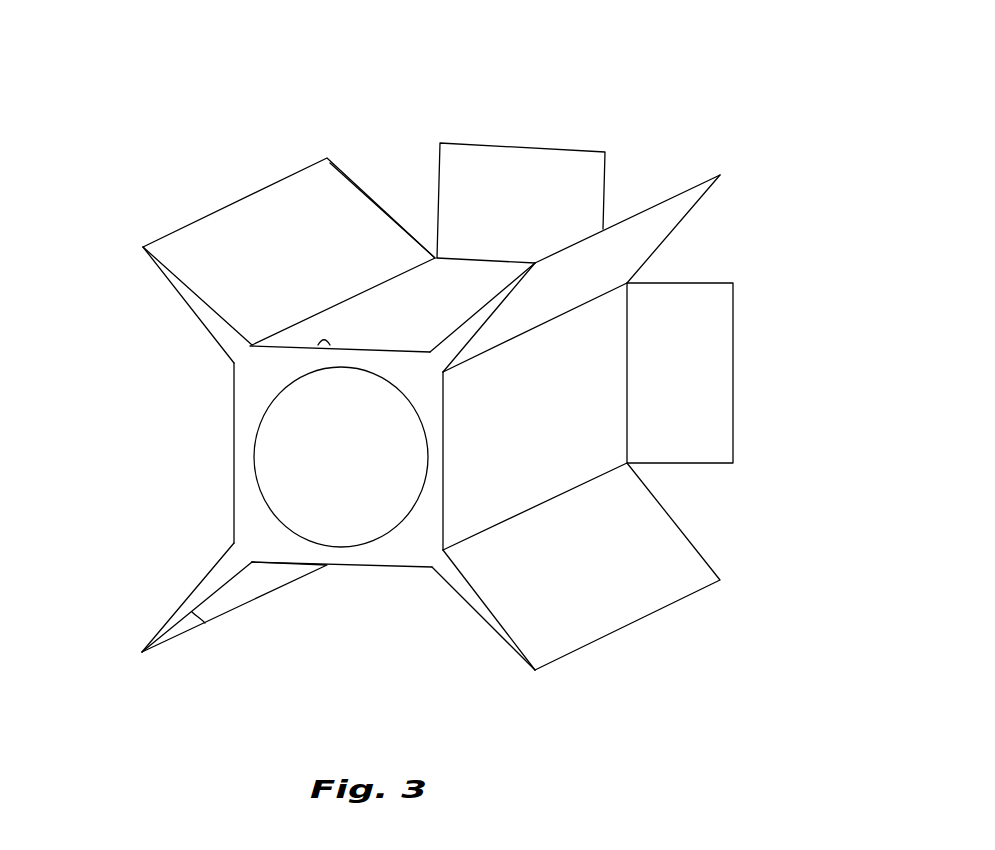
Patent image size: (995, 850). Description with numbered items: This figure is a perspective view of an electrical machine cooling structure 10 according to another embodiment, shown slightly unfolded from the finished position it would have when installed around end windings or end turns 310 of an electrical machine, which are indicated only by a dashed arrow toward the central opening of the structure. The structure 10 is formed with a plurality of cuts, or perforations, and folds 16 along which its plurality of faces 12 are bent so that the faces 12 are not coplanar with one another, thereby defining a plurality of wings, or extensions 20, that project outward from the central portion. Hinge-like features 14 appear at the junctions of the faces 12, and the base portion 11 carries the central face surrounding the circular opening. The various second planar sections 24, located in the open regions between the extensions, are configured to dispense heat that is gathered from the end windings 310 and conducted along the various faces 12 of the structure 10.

The electrical machine cooling structure 10 is at (197, 54).
The base frame 11 is at (262, 169).
The face 12 is at (256, 253).
The hinge 14 is at (328, 162).
The fold 16 is at (210, 198).
The wing 20 is at (137, 212).
The second planar section 24 is at (138, 288).
The end windings 310 is at (310, 472).